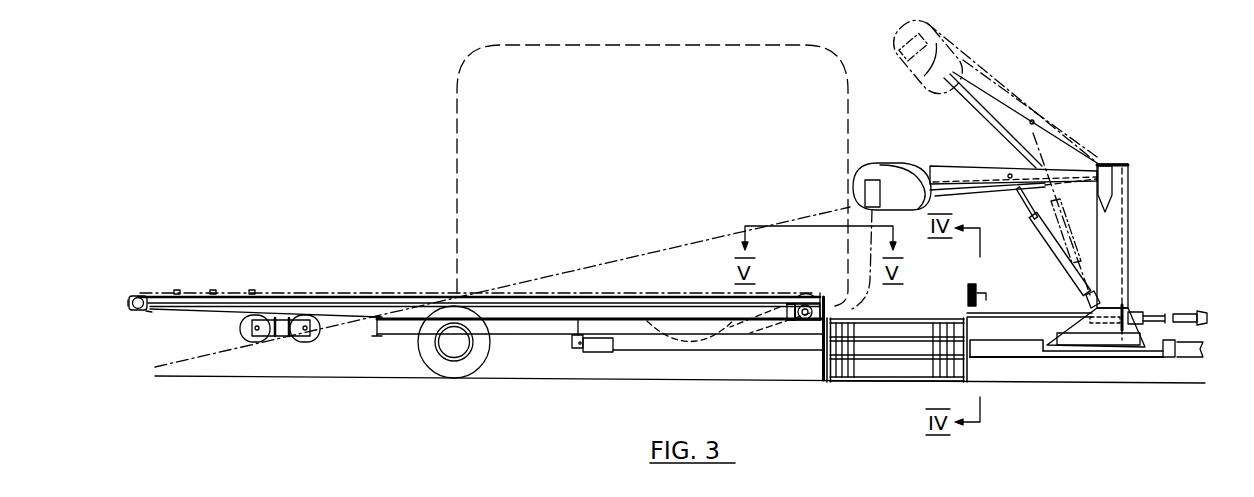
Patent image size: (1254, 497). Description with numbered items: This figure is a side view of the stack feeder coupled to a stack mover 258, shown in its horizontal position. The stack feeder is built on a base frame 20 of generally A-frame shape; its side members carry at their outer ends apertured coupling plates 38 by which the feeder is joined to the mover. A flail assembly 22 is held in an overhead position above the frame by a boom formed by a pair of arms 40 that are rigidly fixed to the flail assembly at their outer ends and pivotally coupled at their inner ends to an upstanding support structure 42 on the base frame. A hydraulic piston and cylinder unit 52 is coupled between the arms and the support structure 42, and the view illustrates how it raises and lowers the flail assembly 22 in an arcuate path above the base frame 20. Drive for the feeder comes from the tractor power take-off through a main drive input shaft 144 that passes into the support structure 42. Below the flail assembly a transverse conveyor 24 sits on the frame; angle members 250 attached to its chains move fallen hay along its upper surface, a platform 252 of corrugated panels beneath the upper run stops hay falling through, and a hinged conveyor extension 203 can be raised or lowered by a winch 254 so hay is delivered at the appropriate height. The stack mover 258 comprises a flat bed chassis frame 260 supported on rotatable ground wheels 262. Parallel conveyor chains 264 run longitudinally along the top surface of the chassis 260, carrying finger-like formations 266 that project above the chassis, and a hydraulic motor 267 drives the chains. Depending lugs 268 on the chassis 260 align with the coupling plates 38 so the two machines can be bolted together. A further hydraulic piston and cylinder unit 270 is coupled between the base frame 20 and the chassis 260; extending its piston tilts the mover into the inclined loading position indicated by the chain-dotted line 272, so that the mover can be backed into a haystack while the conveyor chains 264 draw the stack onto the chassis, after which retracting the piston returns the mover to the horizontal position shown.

The base frame 20 is at (1052, 363).
The flail assembly 22 is at (885, 30).
The conveyor 24 is at (826, 386).
The coupling plate 38 is at (605, 352).
The arms 40 is at (982, 133).
The support structure 42 is at (1110, 267).
The hydraulic piston and cylinder unit 52 is at (1060, 244).
The main drive input shaft 144 is at (1157, 317).
The conveyor extension 203 is at (977, 351).
The angle members 250 is at (897, 317).
The platform 252 is at (875, 355).
The winch 254 is at (985, 282).
The stack mover 258 is at (279, 284).
The flat bed chassis frame 260 is at (342, 310).
The ground wheels 262 is at (467, 367).
The conveyor chains 264 is at (165, 322).
The finger-like formations 266 is at (251, 290).
The hydraulic motor 267 is at (733, 321).
The depending lugs 268 is at (573, 344).
The hydraulic piston and cylinder unit 270 is at (650, 322).
The chain-dotted line 272 is at (228, 352).